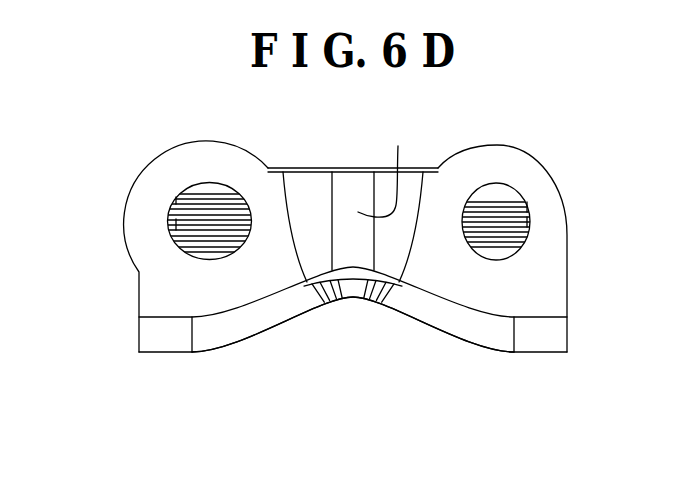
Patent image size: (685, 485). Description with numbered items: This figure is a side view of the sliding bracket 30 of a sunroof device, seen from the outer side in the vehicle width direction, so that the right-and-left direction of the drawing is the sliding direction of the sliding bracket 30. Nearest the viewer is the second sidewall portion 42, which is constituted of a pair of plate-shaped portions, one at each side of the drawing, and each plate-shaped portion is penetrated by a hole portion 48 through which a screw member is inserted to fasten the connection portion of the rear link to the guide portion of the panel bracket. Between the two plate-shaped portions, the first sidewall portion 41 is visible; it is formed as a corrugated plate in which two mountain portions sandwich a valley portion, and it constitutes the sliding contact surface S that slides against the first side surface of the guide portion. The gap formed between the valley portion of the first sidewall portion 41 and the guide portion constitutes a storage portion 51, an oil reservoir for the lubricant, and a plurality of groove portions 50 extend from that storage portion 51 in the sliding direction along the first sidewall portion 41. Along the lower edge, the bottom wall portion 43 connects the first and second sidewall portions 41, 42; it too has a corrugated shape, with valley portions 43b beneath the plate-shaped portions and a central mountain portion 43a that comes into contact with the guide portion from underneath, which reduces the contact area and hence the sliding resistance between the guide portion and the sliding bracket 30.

The sliding bracket 30 is at (78, 138).
The first sidewall portion 41 is at (353, 183).
The second sidewall portion 42 is at (207, 148).
The bottom wall portion 43 is at (138, 334).
The mountain portion 43a is at (353, 292).
The valley portion 43b is at (222, 345).
The hole portion 48 is at (198, 190).
The groove portion 50 is at (178, 228).
The storage portion 51 is at (405, 167).
The sliding contact surface S is at (212, 240).